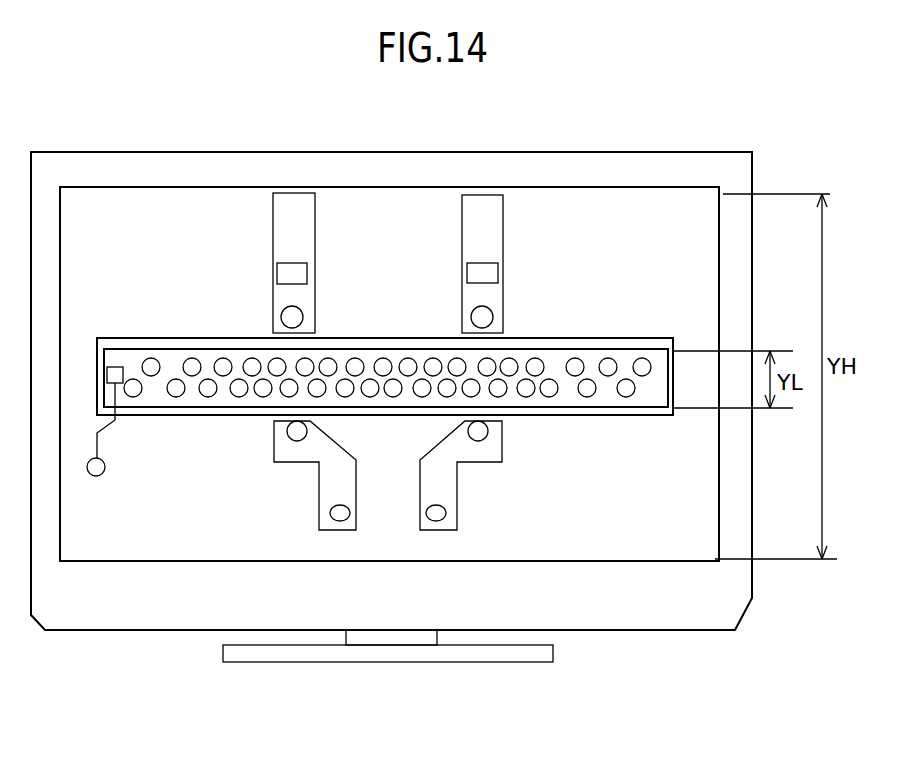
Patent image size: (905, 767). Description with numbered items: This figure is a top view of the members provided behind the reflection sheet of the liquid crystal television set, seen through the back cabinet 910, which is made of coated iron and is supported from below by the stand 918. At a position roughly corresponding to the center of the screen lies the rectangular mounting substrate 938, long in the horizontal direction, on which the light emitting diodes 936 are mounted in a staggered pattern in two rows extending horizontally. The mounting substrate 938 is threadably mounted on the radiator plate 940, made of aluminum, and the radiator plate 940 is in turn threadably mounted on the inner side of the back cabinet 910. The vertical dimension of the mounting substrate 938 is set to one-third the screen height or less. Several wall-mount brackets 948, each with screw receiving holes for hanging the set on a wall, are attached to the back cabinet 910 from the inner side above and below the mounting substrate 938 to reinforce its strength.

The back cabinet 910 is at (620, 213).
The stand 918 is at (325, 653).
The light emitting diodes 936 is at (192, 366).
The mounting substrate 938 is at (190, 398).
The radiator plate 940 is at (385, 408).
The wall-mount bracket 948 is at (293, 213).